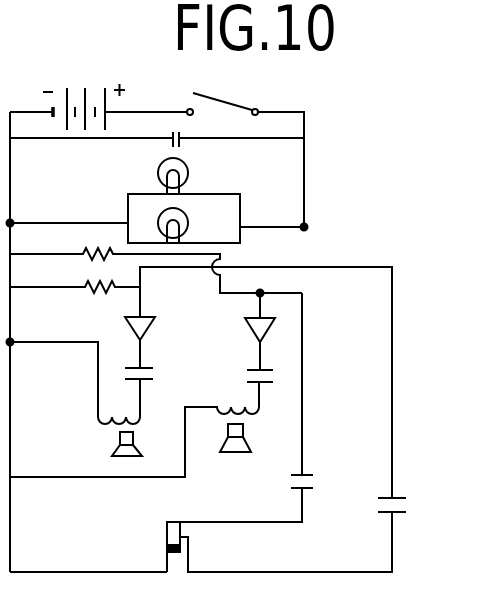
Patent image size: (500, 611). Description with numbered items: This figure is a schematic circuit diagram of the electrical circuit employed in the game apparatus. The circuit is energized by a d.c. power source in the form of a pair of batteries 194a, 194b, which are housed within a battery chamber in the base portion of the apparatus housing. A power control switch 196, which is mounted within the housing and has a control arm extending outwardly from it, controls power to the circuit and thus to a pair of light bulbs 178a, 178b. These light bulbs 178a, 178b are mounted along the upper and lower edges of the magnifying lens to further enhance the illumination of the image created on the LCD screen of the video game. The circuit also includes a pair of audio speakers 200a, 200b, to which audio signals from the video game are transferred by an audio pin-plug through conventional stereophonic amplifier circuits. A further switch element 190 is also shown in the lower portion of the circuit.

The battery 194a is at (74, 89).
The battery 194b is at (121, 81).
The power control switch 196 is at (220, 100).
The light bulb 178a is at (158, 173).
The light bulb 178b is at (158, 223).
The audio speaker 200a is at (225, 451).
The audio speaker 200b is at (118, 450).
The switch 190 is at (173, 555).